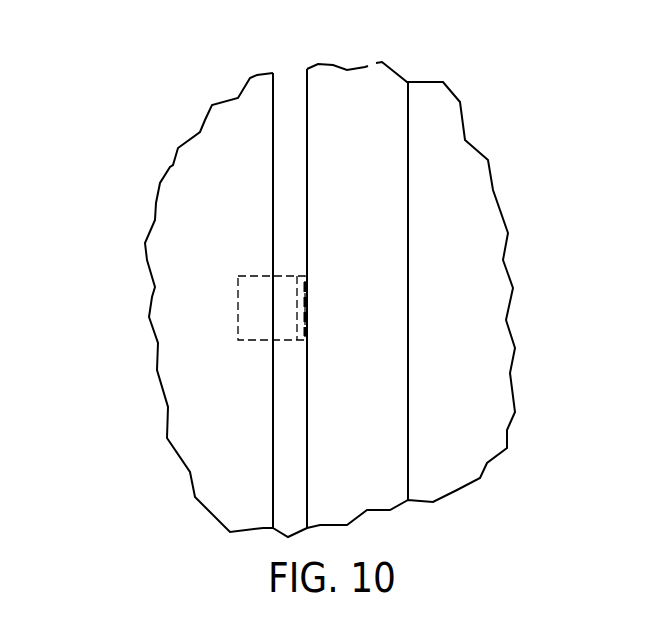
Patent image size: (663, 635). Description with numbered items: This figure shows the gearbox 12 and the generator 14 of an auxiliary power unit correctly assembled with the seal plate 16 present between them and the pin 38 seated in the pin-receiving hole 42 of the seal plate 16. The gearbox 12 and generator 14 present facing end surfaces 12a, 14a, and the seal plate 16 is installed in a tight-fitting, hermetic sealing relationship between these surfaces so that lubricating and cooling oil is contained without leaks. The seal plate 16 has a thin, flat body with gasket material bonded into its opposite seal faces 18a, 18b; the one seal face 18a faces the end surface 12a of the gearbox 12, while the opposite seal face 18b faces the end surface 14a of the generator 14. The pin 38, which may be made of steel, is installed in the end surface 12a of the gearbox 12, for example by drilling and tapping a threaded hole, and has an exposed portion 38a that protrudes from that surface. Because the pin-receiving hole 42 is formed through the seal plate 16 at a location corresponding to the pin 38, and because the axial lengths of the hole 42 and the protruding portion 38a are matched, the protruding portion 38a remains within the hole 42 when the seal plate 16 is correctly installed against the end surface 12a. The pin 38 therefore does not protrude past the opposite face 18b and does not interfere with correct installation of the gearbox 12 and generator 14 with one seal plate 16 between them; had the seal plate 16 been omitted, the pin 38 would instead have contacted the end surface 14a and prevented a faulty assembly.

The gearbox 12 is at (166, 200).
The generator 14 is at (370, 78).
The end surface of the gearbox 12a is at (274, 170).
The end surface of the generator 14a is at (304, 138).
The seal plate 16 is at (298, 476).
The seal face 18a is at (272, 400).
The seal face 18b is at (310, 422).
The pin 38 is at (238, 312).
The exposed portion of the pin 38a is at (290, 302).
The pin-receiving hole 42 is at (286, 343).